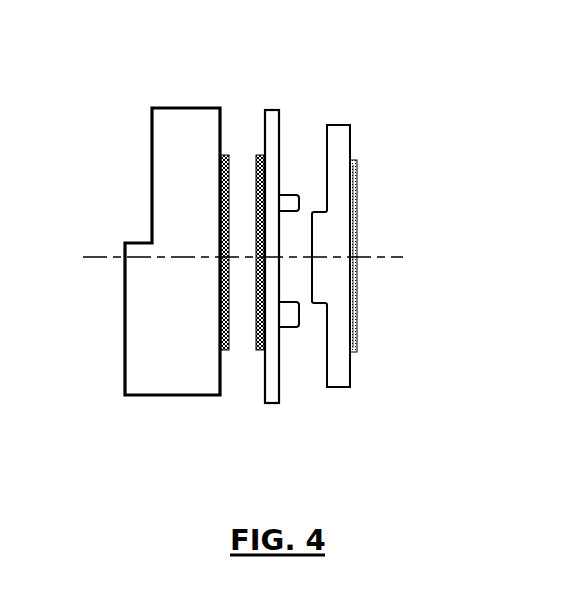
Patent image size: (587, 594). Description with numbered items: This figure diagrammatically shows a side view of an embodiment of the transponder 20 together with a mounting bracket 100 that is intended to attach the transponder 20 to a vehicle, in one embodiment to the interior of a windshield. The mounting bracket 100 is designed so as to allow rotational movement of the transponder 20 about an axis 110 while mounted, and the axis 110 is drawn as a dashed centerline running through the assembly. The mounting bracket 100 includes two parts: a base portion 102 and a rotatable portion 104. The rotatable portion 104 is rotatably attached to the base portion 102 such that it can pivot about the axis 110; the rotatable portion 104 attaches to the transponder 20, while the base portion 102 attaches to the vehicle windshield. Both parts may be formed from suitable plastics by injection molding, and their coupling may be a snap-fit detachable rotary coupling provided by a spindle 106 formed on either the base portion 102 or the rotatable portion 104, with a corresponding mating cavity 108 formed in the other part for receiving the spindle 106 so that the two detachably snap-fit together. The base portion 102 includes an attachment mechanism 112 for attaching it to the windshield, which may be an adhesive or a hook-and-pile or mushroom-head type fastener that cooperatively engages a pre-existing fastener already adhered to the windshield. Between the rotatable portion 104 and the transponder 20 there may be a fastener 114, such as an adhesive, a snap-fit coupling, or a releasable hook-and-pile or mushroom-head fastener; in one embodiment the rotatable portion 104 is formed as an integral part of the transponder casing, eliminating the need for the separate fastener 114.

The transponder 20 is at (177, 251).
The mounting bracket 100 is at (321, 60).
The base portion 102 is at (338, 408).
The rotatable portion 104 is at (290, 408).
The spindle 106 is at (318, 303).
The cavity 108 is at (295, 198).
The axis 110 is at (88, 257).
The attachment mechanism 112 is at (358, 196).
The fastener 114 is at (240, 121).